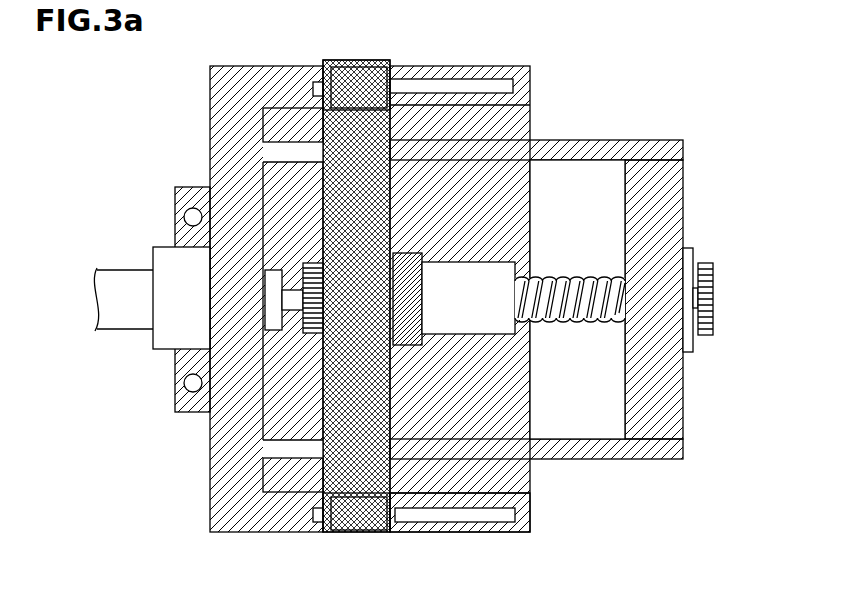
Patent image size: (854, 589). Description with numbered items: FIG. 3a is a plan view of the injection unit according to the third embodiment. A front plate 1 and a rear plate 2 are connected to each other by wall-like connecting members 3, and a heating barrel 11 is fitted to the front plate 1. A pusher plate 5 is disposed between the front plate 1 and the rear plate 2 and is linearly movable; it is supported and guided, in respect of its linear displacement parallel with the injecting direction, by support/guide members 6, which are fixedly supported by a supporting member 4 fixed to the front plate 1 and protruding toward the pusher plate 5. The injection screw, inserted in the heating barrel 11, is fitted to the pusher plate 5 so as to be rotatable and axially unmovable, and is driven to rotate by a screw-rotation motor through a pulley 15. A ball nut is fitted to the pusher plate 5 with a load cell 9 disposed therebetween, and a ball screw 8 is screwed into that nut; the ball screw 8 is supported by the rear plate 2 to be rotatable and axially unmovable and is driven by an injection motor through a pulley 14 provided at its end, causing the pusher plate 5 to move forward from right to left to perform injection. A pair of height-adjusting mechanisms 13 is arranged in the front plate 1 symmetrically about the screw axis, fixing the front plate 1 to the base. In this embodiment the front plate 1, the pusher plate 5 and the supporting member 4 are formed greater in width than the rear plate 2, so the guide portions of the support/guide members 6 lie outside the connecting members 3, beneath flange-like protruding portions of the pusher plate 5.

The front plate 1 is at (228, 478).
The rear plate 2 is at (675, 428).
The wall-like connecting members 3 is at (498, 262).
The supporting member 4 is at (530, 512).
The pusher plate 5 is at (332, 536).
The support/guide members 6 is at (443, 515).
The ball screw 8 is at (577, 277).
The load cell 9 is at (447, 253).
The heating barrel 11 is at (128, 277).
The height-adjusting mechanisms 13 is at (176, 219).
The pulley 14 is at (708, 263).
The pulley 15 is at (313, 263).